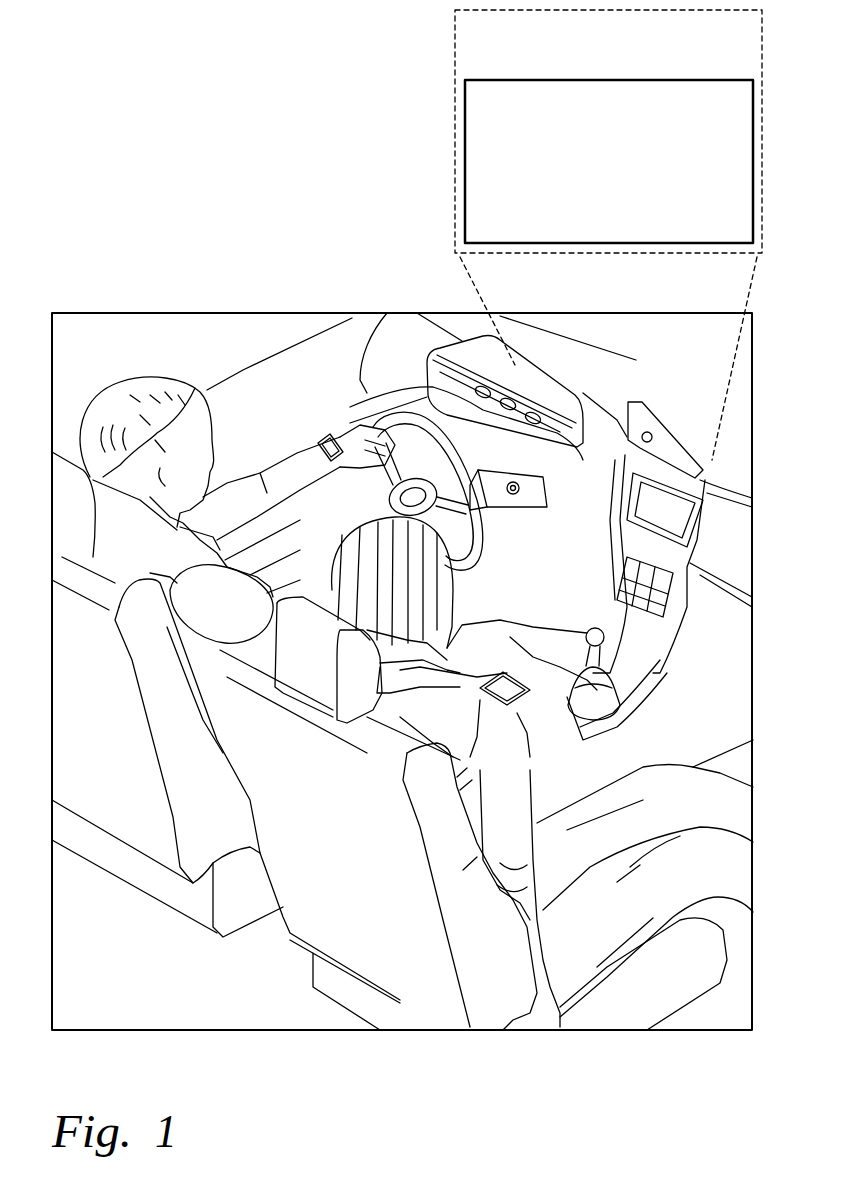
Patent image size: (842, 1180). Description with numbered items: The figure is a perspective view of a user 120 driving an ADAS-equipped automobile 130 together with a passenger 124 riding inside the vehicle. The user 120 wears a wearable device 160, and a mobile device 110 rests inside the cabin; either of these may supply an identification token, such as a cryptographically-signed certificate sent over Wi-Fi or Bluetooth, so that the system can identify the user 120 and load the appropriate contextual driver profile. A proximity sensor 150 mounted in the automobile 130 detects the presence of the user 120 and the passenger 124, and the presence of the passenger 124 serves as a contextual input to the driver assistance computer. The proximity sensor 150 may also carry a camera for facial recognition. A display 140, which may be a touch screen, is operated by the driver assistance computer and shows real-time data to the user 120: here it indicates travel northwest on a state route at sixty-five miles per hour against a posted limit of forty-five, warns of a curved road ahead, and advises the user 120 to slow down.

The mobile device 110 is at (541, 624).
The user 120 is at (118, 390).
The passenger 124 is at (535, 795).
The automobile 130 is at (202, 387).
The display 140 is at (610, 78).
The proximity sensor 150 is at (710, 470).
The wearable device 160 is at (318, 438).